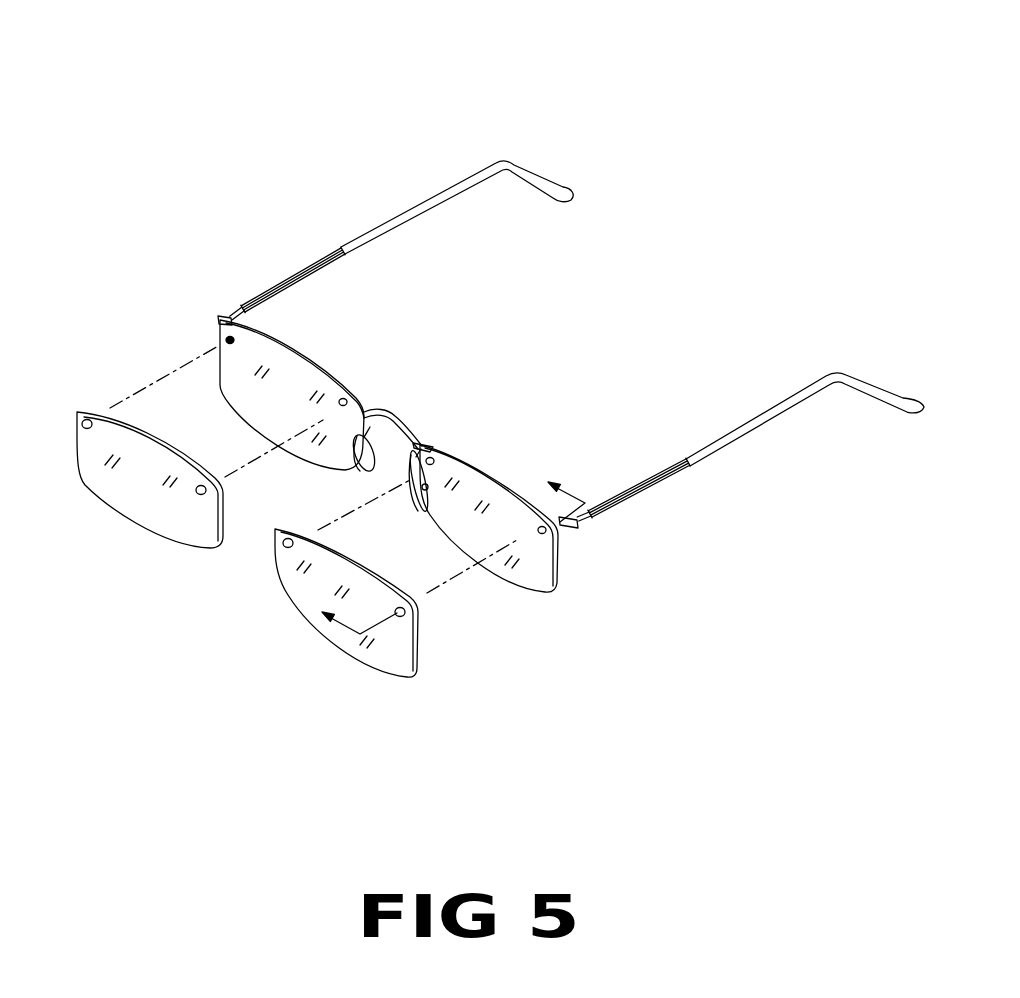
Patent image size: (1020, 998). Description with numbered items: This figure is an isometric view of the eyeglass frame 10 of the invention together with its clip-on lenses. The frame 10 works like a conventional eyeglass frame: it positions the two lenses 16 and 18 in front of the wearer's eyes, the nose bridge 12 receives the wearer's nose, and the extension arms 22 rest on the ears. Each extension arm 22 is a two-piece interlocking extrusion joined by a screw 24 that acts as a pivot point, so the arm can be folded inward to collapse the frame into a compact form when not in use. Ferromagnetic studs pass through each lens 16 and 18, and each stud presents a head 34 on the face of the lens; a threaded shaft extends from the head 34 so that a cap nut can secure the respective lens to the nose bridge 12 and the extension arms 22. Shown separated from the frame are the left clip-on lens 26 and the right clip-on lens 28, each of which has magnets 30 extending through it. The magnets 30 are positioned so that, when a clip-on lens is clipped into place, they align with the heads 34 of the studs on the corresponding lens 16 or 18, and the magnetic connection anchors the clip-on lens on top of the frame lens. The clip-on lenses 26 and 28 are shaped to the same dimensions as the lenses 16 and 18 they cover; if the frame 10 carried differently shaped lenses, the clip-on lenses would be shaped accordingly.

The eyeglass frame 10 is at (285, 128).
The nose bridge 12 is at (388, 423).
The lens 16 is at (473, 487).
The lens 18 is at (243, 355).
The extension arm 22 is at (371, 235).
The screw 24 is at (243, 305).
The left clip-on lens 26 is at (378, 653).
The right clip-on lens 28 is at (152, 510).
The magnet 30 is at (86, 412).
The head 34 is at (222, 337).